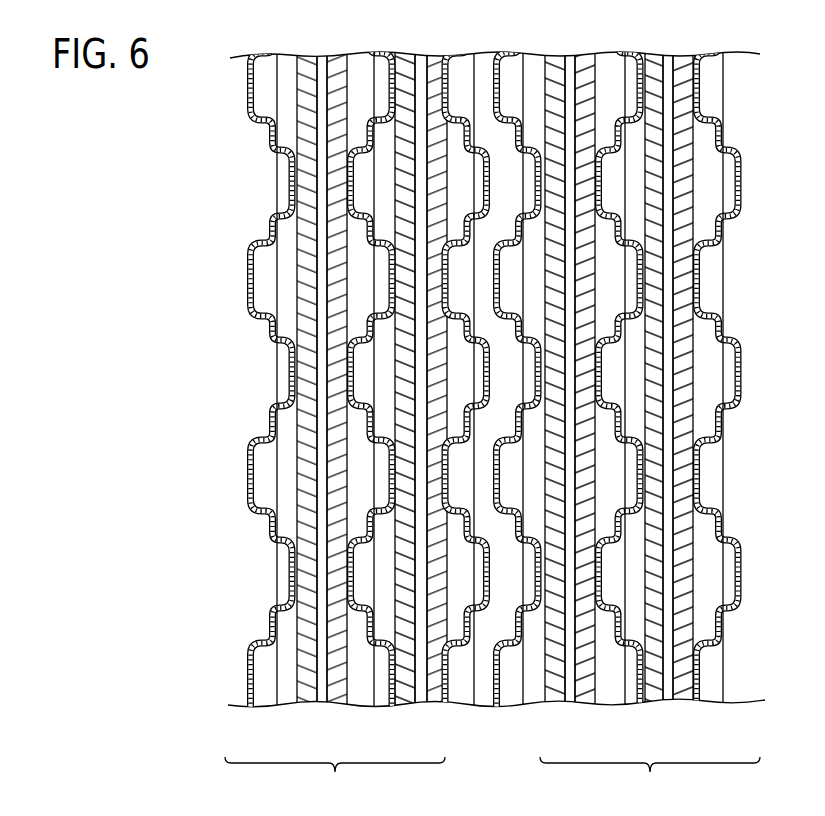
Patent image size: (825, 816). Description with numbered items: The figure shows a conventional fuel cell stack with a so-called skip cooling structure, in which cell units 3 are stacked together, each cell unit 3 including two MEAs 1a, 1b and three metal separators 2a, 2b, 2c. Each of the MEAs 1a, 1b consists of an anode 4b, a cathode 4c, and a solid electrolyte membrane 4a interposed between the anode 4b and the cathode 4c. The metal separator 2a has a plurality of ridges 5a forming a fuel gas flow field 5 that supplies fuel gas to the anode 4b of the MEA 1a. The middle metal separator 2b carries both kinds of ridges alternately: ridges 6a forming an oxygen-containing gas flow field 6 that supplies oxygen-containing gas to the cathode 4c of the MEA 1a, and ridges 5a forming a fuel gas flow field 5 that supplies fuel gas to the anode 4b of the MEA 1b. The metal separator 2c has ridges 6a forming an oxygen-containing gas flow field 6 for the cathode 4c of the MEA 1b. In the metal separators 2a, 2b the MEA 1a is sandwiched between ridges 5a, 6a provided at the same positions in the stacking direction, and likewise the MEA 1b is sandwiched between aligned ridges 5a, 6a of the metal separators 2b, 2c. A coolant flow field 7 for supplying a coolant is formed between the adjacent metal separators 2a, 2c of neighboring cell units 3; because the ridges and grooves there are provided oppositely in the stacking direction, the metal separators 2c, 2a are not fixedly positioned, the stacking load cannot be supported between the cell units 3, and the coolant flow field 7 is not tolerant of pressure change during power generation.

The MEA 1a is at (289, 358).
The MEA 1b is at (424, 52).
The metal separator 2a is at (265, 712).
The metal separator 2b is at (382, 712).
The metal separator 2c is at (458, 712).
The cell unit 3 is at (492, 780).
The solid electrolyte membrane 4a is at (323, 283).
The anode 4b is at (300, 232).
The cathode 4c is at (338, 328).
The fuel gas flow field 5 is at (290, 510).
The ridge 5a is at (395, 413).
The oxygen-containing gas flow field 6 is at (360, 470).
The ridge 6a is at (352, 373).
The coolant flow field 7 is at (500, 580).